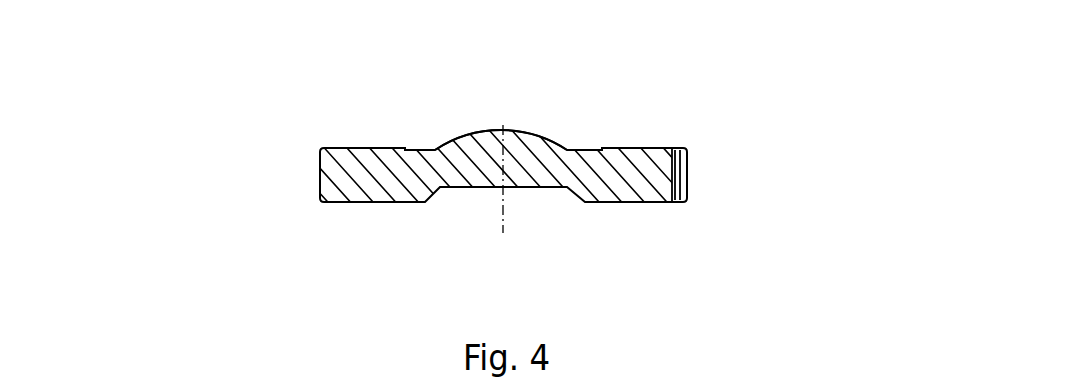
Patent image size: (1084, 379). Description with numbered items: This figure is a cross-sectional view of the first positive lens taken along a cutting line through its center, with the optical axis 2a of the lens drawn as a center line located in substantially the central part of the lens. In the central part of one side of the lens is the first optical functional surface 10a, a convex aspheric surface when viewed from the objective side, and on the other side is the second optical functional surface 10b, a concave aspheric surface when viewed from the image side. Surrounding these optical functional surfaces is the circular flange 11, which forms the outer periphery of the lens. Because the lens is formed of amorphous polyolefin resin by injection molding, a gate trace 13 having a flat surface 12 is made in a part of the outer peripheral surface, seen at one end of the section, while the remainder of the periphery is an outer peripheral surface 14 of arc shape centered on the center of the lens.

The optical axis 2a is at (503, 120).
The first optical functional surface 10a is at (514, 130).
The second optical functional surface 10b is at (532, 188).
The circular flange 11 is at (640, 148).
The flat surface 12 is at (670, 182).
The gate trace 13 is at (690, 158).
The outer peripheral surface 14 is at (320, 183).